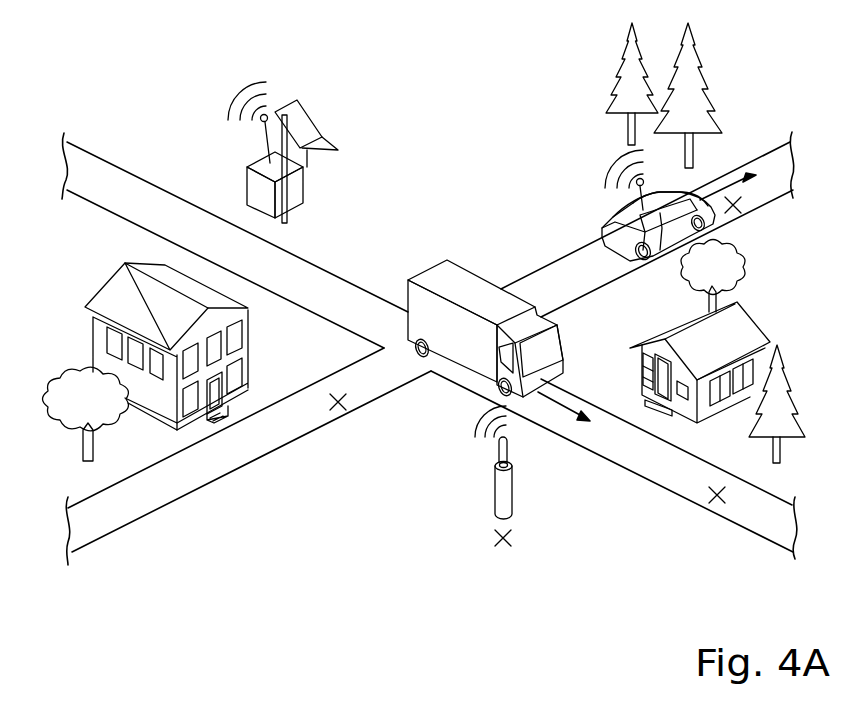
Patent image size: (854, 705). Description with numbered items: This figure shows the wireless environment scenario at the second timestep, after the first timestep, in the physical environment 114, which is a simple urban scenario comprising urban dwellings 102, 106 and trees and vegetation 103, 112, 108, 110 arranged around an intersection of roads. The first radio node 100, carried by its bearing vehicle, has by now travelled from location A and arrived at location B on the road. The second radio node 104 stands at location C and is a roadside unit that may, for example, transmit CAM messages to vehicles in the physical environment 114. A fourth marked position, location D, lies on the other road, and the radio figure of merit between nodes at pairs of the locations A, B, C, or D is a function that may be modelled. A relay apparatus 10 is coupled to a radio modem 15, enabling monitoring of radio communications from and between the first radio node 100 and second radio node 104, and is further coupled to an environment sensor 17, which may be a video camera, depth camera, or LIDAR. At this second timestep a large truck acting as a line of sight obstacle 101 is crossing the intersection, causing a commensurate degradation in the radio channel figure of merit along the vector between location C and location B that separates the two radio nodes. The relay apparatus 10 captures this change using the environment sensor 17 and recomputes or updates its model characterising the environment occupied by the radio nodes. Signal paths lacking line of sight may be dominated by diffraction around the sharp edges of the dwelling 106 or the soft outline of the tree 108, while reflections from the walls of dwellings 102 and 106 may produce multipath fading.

The physical environment 114 is at (466, 88).
The relay apparatus 10 is at (247, 187).
The radio modem 15 is at (266, 136).
The environment sensor 17 is at (312, 113).
The line of sight obstacle 101 is at (427, 267).
The urban dwelling 102 is at (118, 267).
The tree 103 is at (70, 372).
The second radio node 104 is at (493, 492).
The first radio node 100 is at (610, 218).
The trees 112 is at (720, 85).
The tree 108 is at (745, 262).
The urban dwelling 106 is at (675, 327).
The tree 110 is at (782, 347).
The location A is at (340, 410).
The location B is at (742, 208).
The location C is at (503, 547).
The location D is at (720, 503).